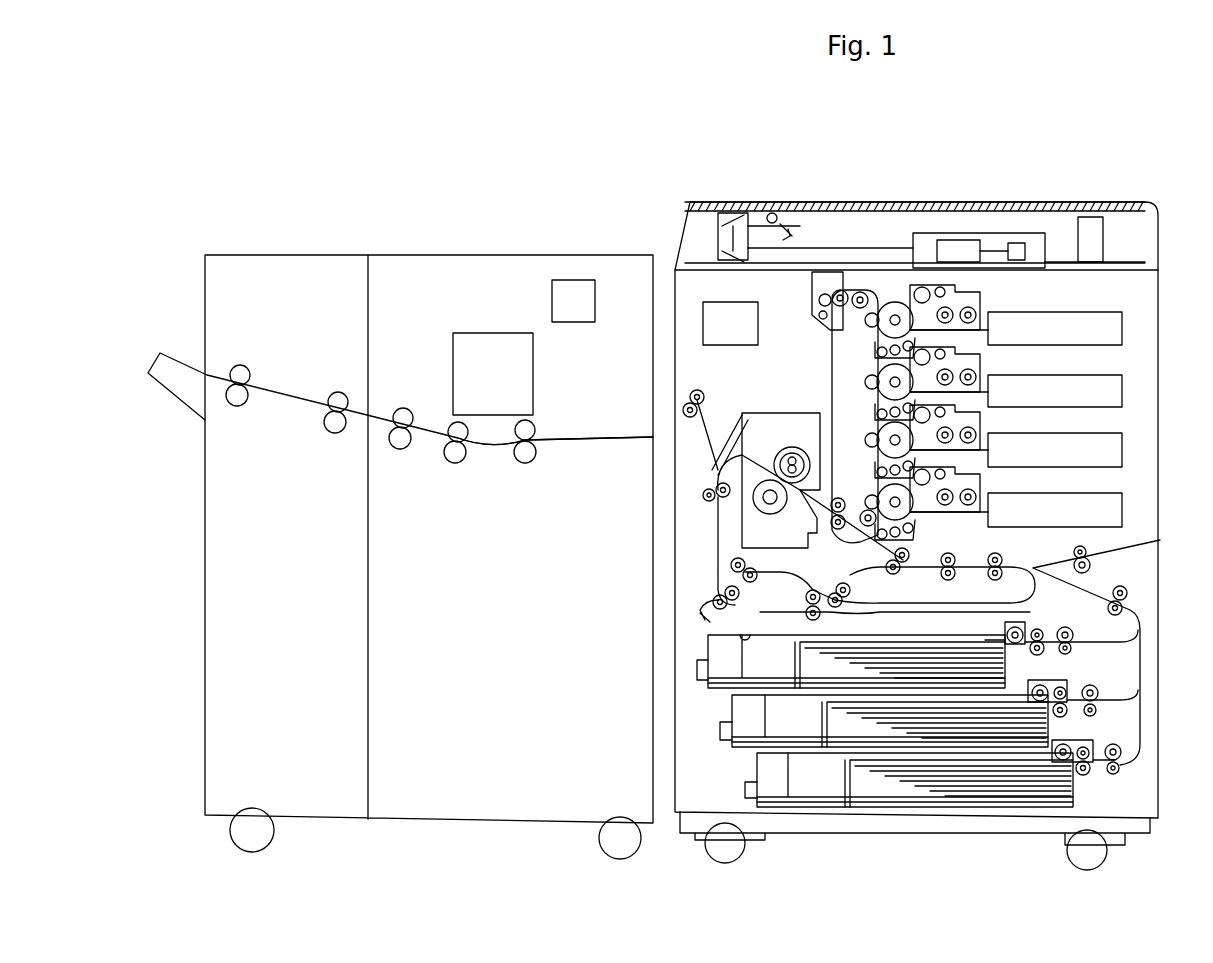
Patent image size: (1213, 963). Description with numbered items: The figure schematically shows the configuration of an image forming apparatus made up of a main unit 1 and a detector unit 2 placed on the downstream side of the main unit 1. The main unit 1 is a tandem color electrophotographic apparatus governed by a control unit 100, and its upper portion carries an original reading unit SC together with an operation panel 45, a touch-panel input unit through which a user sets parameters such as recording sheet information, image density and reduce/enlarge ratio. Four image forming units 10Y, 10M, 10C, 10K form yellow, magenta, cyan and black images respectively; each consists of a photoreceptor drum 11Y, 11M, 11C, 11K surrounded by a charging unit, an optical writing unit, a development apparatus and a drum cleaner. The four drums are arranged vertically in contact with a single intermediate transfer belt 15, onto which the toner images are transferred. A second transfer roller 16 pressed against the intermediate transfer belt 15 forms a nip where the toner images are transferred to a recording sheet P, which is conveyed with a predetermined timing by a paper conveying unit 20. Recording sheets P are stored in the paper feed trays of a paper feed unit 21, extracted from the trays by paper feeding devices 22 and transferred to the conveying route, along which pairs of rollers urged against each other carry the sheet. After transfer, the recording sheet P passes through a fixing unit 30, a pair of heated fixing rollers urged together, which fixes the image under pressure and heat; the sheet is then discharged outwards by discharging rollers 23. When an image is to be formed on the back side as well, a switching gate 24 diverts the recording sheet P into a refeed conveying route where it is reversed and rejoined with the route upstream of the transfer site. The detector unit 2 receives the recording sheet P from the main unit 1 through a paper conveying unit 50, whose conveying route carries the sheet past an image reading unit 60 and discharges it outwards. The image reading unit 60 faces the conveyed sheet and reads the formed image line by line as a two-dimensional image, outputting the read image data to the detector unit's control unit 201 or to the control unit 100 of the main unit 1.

The main unit 1 is at (1145, 201).
The detector unit 2 is at (460, 255).
The control unit 201 is at (565, 280).
The image reading unit 60 is at (483, 333).
The paper conveying unit 50 is at (566, 415).
The original reading unit SC is at (887, 231).
The operation panel 45 is at (1075, 262).
The control unit 100 is at (756, 303).
The image forming unit 10Y is at (990, 308).
The image forming unit 10M is at (990, 372).
The image forming unit 10C is at (990, 430).
The image forming unit 10K is at (990, 490).
The photoreceptor drum 11Y is at (880, 303).
The photoreceptor drum 11M is at (880, 372).
The photoreceptor drum 11C is at (880, 432).
The photoreceptor drum 11K is at (880, 492).
The intermediate transfer belt 15 is at (832, 352).
The discharging rollers 23 is at (700, 390).
The fixing unit 30 is at (775, 413).
The switching gate 24 is at (735, 440).
The second transfer roller 16 is at (838, 530).
The paper conveying unit 20 is at (700, 612).
The paper feed unit 21 is at (732, 722).
The paper feeding devices 22 is at (1043, 625).
The recording sheet P is at (975, 650).